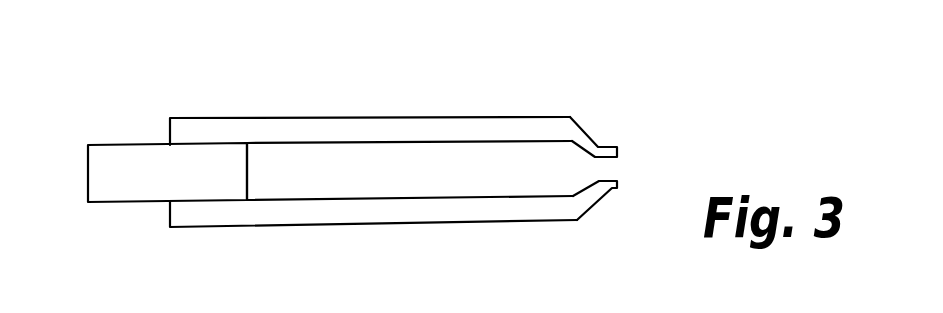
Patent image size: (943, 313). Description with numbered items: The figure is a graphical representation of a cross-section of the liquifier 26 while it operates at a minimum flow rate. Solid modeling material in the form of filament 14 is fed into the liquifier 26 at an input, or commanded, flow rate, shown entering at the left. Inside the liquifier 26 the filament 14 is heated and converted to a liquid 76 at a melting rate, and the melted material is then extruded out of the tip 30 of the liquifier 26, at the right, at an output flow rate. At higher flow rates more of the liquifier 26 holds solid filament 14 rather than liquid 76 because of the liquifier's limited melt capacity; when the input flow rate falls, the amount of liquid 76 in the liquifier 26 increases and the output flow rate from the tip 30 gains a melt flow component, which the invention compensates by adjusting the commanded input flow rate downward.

The filament 14 is at (103, 190).
The liquifier 26 is at (352, 137).
The liquid 76 is at (524, 157).
The tip 30 is at (613, 190).